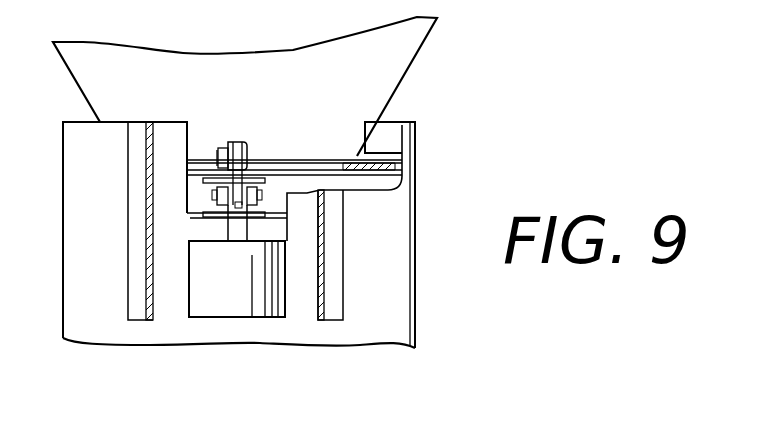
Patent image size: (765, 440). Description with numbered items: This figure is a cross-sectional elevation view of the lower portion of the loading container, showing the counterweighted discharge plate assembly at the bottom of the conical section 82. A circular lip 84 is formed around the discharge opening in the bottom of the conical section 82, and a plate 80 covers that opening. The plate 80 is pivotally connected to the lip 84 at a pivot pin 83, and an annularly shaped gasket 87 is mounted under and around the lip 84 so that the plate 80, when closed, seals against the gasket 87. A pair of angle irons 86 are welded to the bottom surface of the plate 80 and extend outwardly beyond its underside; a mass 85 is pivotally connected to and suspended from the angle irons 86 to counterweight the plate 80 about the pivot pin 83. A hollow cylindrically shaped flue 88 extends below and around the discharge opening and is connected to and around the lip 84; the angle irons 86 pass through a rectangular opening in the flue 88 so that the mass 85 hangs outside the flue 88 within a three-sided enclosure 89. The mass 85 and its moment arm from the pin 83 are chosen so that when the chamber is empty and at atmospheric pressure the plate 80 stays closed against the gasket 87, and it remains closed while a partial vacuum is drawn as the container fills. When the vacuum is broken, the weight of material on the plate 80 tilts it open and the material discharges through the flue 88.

The plate 80 is at (193, 176).
The conical section 82 is at (257, 57).
The pivot pin 83 is at (217, 147).
The circular lip 84 is at (317, 161).
The mass 85 is at (232, 318).
The angle irons 86 is at (238, 212).
The gasket 87 is at (377, 170).
The flue 88 is at (68, 290).
The three-sided enclosure 89 is at (148, 137).